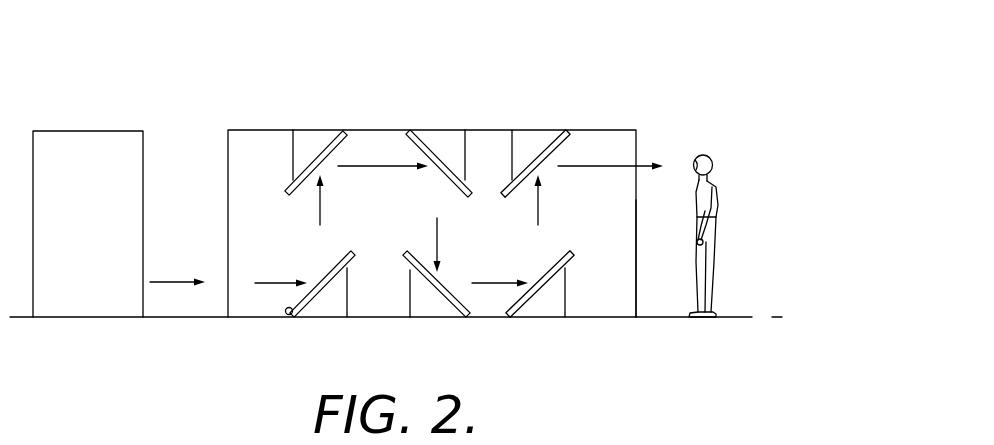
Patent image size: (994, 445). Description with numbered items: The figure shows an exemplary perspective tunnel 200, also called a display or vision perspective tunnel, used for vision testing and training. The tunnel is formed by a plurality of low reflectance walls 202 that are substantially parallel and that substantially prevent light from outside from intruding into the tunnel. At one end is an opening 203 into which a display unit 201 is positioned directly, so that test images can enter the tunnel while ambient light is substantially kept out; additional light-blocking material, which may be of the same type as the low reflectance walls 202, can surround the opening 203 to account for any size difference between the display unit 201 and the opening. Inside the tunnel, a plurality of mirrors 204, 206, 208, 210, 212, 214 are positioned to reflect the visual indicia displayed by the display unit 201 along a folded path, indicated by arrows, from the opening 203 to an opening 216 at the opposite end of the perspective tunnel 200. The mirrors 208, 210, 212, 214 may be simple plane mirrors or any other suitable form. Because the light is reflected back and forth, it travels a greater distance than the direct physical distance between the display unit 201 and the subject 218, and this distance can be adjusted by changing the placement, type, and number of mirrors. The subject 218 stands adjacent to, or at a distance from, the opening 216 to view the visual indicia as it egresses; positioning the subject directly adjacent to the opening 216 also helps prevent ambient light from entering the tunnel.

The perspective tunnel 200 is at (113, 42).
The display unit 201 is at (81, 130).
The low reflectance walls 202 is at (286, 314).
The opening 203 is at (228, 156).
The mirror 204 is at (353, 133).
The mirror 206 is at (322, 292).
The mirror 208 is at (420, 138).
The mirror 210 is at (452, 311).
The mirror 212 is at (534, 306).
The mirror 214 is at (571, 133).
The opening 216 is at (637, 283).
The subject 218 is at (721, 192).